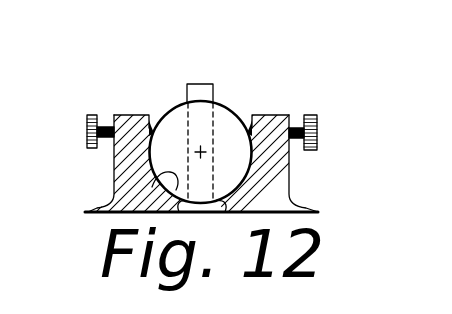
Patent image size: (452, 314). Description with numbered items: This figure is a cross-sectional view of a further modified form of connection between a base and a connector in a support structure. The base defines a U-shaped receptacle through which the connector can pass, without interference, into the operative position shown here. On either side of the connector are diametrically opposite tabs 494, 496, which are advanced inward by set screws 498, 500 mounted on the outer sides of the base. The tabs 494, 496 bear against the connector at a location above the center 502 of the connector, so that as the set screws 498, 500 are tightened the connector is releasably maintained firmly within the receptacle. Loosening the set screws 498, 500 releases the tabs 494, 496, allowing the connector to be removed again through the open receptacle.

The tab 494 is at (250, 130).
The tab 496 is at (152, 115).
The set screw 498 is at (317, 128).
The set screw 500 is at (95, 114).
The center 502 is at (205, 155).